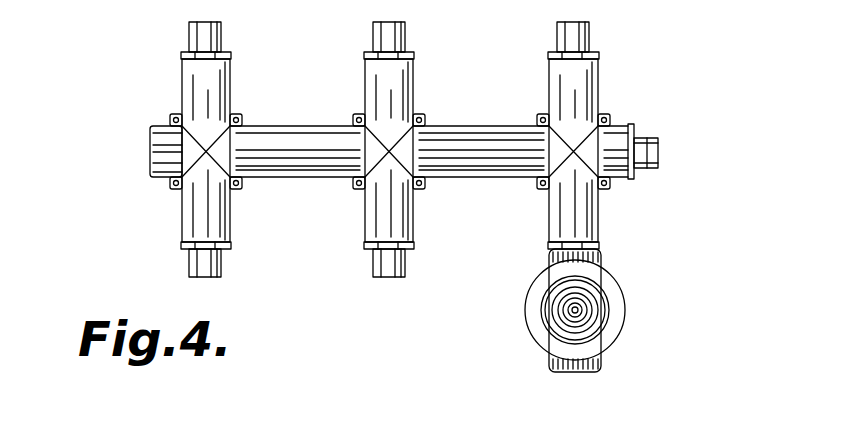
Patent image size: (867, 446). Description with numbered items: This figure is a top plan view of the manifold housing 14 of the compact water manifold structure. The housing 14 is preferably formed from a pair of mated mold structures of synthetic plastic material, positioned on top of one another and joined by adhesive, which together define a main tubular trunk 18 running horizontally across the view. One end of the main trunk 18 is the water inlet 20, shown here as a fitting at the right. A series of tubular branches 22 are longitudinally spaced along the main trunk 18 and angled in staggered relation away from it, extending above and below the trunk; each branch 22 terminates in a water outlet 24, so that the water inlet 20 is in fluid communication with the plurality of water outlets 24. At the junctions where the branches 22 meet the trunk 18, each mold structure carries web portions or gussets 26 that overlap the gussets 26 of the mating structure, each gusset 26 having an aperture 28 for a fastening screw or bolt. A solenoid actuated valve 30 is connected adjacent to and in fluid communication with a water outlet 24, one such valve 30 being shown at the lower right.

The manifold housing 14 is at (483, 162).
The main tubular trunk 18 is at (500, 143).
The water inlet 20 is at (652, 152).
The tubular branches 22 is at (213, 78).
The water outlets 24 is at (212, 33).
The gussets 26 is at (356, 116).
The aperture 28 is at (244, 119).
The solenoid actuated valves 30 is at (615, 297).